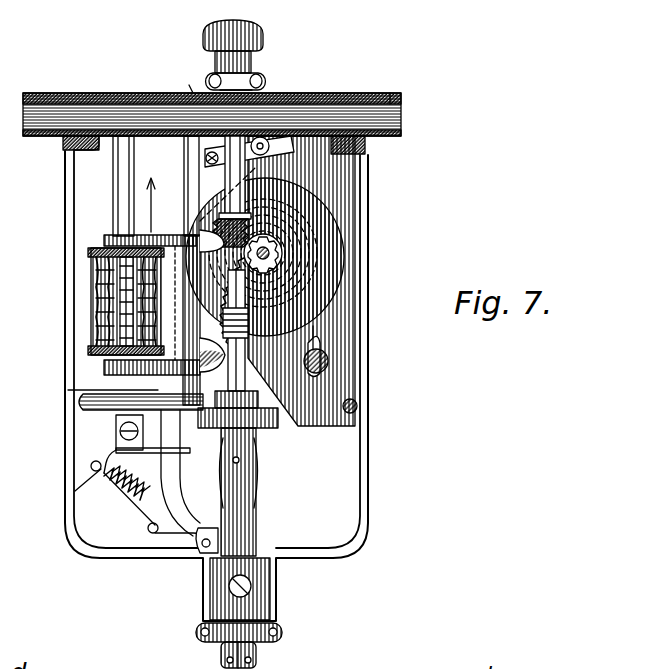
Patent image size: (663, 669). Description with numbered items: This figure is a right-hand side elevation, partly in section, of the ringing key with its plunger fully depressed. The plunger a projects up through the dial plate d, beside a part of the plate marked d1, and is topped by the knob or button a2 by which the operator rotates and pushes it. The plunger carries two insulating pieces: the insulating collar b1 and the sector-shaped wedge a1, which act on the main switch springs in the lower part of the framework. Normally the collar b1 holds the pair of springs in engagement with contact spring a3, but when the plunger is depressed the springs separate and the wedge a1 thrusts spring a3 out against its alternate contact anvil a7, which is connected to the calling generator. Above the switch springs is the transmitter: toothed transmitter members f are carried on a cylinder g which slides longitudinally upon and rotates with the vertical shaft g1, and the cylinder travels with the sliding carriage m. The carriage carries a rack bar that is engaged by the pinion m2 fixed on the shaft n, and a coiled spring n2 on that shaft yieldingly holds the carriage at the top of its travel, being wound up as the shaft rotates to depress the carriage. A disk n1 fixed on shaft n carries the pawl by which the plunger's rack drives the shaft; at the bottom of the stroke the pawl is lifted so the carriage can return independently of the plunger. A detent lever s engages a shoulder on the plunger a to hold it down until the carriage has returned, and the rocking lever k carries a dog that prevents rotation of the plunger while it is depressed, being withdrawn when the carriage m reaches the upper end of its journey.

The dial plate d is at (376, 90).
The top plate flange d1 is at (173, 77).
The knob or button a2 is at (250, 30).
The vertical shaft g1 is at (107, 163).
The rocking lever k is at (198, 151).
The detent lever s is at (216, 186).
The pinion m2 is at (270, 230).
The disk n1 is at (332, 226).
The coiled spring n2 is at (271, 253).
The shaft n is at (243, 298).
The sliding carriage m is at (164, 317).
The cylinder g is at (84, 243).
The transmitter members f is at (84, 292).
The contact spring a3 is at (187, 473).
The alternate contact anvil a7 is at (213, 494).
The sector-shaped wedge a1 is at (262, 420).
The plunger a is at (248, 434).
The insulating collar b1 is at (246, 462).